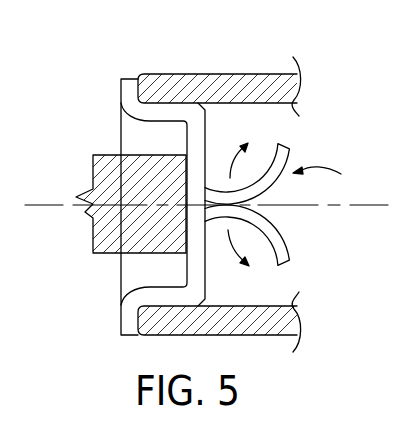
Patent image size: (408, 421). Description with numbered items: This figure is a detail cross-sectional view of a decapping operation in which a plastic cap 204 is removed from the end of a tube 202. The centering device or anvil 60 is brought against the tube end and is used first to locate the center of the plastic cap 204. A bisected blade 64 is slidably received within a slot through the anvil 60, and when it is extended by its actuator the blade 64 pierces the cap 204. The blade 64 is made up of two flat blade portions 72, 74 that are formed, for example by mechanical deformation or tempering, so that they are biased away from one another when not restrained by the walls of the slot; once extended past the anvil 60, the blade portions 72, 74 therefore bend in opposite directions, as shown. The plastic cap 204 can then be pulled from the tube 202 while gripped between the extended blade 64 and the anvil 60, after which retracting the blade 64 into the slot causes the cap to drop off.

The tube 202 is at (231, 74).
The plastic cap 204 is at (166, 111).
The centering device or anvil 60 is at (120, 268).
The flat blade portion 72 is at (290, 143).
The flat blade portion 74 is at (291, 262).
The bisected blade 64 is at (330, 178).